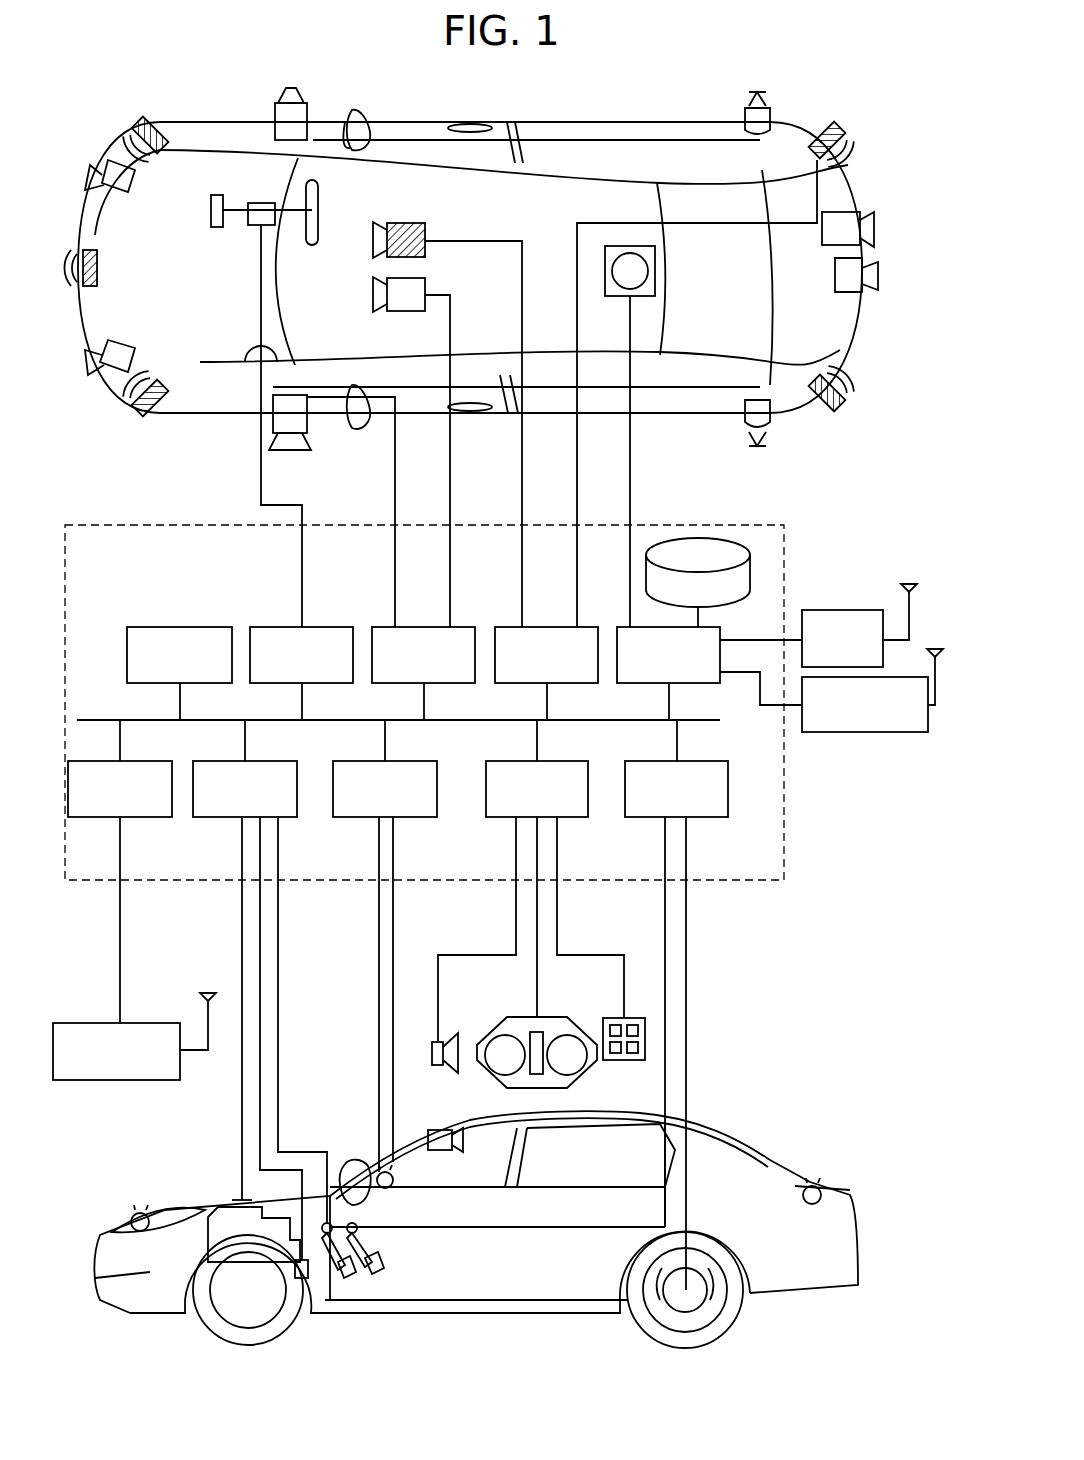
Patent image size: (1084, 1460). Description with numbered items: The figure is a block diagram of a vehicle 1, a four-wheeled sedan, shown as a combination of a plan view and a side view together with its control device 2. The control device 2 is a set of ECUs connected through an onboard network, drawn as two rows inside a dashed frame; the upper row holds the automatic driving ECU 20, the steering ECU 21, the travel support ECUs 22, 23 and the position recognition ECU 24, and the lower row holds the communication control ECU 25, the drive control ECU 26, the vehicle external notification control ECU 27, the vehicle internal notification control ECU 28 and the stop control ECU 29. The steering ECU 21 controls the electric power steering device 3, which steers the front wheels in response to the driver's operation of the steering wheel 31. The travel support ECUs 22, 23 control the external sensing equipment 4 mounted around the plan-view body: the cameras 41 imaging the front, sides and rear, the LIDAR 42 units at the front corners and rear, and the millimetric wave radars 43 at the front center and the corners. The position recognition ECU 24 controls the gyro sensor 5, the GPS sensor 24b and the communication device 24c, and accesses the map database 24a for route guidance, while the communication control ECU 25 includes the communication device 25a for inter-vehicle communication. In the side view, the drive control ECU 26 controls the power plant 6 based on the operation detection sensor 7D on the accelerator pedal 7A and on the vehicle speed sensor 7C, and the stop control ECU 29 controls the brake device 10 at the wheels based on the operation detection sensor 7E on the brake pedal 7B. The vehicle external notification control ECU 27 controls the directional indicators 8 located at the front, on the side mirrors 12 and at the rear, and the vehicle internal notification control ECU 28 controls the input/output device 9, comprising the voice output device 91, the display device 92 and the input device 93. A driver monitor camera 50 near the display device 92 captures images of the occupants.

The vehicle 1 is at (870, 192).
The control device 2 is at (752, 882).
The electric power steering device 3 is at (216, 232).
The steering wheel 31 is at (312, 248).
The detection units 4 is at (102, 128).
The camera 41 is at (275, 118).
The LIDAR 42 is at (126, 195).
The millimetric wave radar 43 is at (152, 150).
The gyro sensor 5 is at (656, 266).
The power plant 6 is at (220, 1207).
The accelerator pedal 7A is at (356, 1278).
The brake pedal 7B is at (384, 1262).
The vehicle speed sensor 7C is at (302, 1280).
The operation detection sensor 7D is at (328, 1222).
The operation detection sensor 7E is at (357, 1226).
The directional indicators 8 is at (131, 1215).
The input/output device 9 is at (470, 1088).
The voice output device 91 is at (435, 1045).
The display device 92 is at (488, 1045).
The input device 93 is at (632, 1062).
The brake device 10 is at (690, 1312).
The side mirrors 12 is at (360, 108).
The automatic driving ECU 20 is at (210, 627).
The steering ECU 21 is at (330, 627).
The travel support ECU 22 is at (422, 627).
The travel support ECU 23 is at (545, 627).
The position recognition ECU 24 is at (615, 627).
The database 24a is at (693, 538).
The GPS sensor 24b is at (845, 610).
The communication device 24c is at (842, 733).
The communication control ECU 25 is at (148, 820).
The communication device 25a is at (110, 1082).
The drive control ECU 26 is at (216, 820).
The vehicle external notification control ECU 27 is at (420, 820).
The vehicle internal notification control ECU 28 is at (575, 820).
The stop control ECU 29 is at (710, 820).
The driver monitor camera 50 is at (458, 1150).